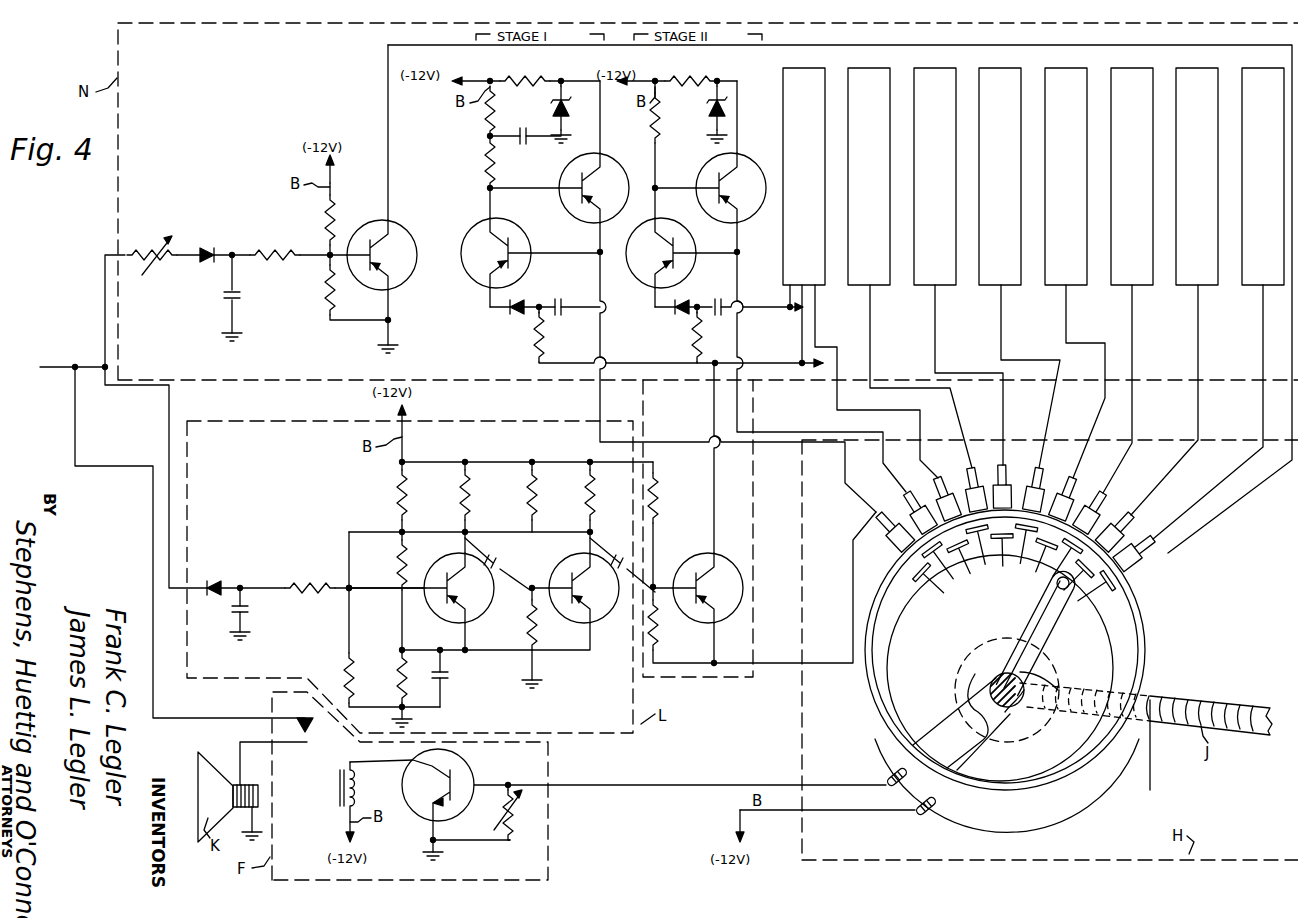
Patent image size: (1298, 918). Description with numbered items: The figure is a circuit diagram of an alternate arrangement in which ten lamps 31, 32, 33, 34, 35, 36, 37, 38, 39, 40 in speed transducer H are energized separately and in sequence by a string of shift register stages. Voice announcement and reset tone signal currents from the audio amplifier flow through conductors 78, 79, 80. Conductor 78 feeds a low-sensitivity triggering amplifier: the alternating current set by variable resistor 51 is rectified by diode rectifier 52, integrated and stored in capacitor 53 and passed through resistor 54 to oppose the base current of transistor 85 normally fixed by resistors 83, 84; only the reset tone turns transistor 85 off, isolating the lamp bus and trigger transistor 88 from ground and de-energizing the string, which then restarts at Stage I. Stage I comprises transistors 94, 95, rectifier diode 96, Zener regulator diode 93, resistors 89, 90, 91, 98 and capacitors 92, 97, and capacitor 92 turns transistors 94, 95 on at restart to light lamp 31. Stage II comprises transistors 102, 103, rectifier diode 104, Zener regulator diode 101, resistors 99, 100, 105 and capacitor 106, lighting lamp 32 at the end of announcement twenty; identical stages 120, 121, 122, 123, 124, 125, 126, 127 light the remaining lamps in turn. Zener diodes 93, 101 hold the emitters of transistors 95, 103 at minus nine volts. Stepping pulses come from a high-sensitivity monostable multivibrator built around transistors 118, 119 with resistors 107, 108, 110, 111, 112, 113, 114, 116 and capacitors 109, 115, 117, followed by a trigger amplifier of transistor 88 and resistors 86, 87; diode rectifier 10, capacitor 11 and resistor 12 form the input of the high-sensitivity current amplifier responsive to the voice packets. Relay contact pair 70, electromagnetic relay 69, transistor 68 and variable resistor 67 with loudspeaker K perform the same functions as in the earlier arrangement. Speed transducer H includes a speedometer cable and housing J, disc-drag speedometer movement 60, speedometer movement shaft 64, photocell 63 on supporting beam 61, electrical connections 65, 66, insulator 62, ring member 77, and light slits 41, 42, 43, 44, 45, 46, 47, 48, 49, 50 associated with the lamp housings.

The diode rectifier 10 is at (212, 574).
The capacitor 11 is at (220, 631).
The resistor 12 is at (314, 584).
The lamp 31 is at (889, 539).
The lamp 32 is at (922, 496).
The lamp 33 is at (956, 480).
The lamp 34 is at (988, 468).
The lamp 35 is at (1010, 464).
The lamp 36 is at (1052, 479).
The lamp 37 is at (1084, 492).
The lamp 38 is at (1112, 508).
The lamp 39 is at (1136, 526).
The lamp 40 is at (1150, 558).
The light slit 41 is at (920, 590).
The light slit 42 is at (947, 572).
The light slit 43 is at (968, 557).
The light slit 44 is at (990, 546).
The light slit 45 is at (1004, 572).
The light slit 46 is at (1026, 549).
The light slit 47 is at (1050, 574).
The light slit 48 is at (1080, 580).
The light slit 49 is at (1102, 598).
The light slit 50 is at (1116, 616).
The variable resistor 51 is at (152, 242).
The diode rectifier 52 is at (216, 246).
The capacitor 53 is at (224, 300).
The resistor 54 is at (305, 247).
The disc-drag speedometer movement 60 is at (1036, 736).
The supporting beam 61 is at (1030, 616).
The insulator 62 is at (974, 716).
The photocell 63 is at (1058, 614).
The speedometer movement shaft 64 is at (1048, 668).
The electrical connection 65 is at (932, 724).
The electrical connection 66 is at (979, 752).
The variable resistor 67 is at (514, 816).
The transistor 68 is at (468, 782).
The electromagnetic relay 69 is at (352, 778).
The relay contact pair 70 is at (305, 732).
The ring member 77 is at (1124, 778).
The conductor 78 is at (105, 320).
The conductor 79 is at (118, 385).
The conductor 80 is at (75, 419).
The resistor 83 is at (334, 204).
The resistor 84 is at (324, 296).
The transistor 85 is at (420, 223).
The resistor 86 is at (668, 524).
The resistor 87 is at (662, 639).
The transistor 88 is at (716, 616).
The resistor 89 is at (488, 122).
The resistor 90 is at (486, 174).
The resistor 91 is at (546, 76).
The capacitor 92 is at (520, 136).
The Zener regulator diode 93 is at (565, 118).
The transistor 94 is at (476, 279).
The transistor 95 is at (626, 172).
The rectifier diode 96 is at (504, 316).
The capacitor 97 is at (580, 300).
The resistor 98 is at (534, 344).
The resistor 99 is at (650, 138).
The resistor 100 is at (722, 76).
The Zener regulator diode 101 is at (712, 121).
The transistor 102 is at (637, 238).
The transistor 103 is at (758, 168).
The rectifier diode 104 is at (682, 313).
The resistor 105 is at (694, 347).
The capacitor 106 is at (722, 300).
The resistor 107 is at (397, 493).
The resistor 108 is at (463, 494).
The capacitor 109 is at (510, 551).
The resistor 110 is at (540, 490).
The resistor 111 is at (594, 502).
The resistor 112 is at (398, 565).
The resistor 113 is at (398, 681).
The resistor 114 is at (346, 650).
The capacitor 115 is at (452, 678).
The resistor 116 is at (540, 630).
The capacitor 117 is at (634, 555).
The transistor 118 is at (482, 620).
The transistor 119 is at (592, 630).
The shift register stage 120 is at (809, 65).
The shift register stage 121 is at (874, 65).
The shift register stage 122 is at (940, 65).
The shift register stage 123 is at (1005, 65).
The shift register stage 124 is at (1071, 65).
The shift register stage 125 is at (1137, 65).
The shift register stage 126 is at (1202, 65).
The shift register stage 127 is at (1268, 65).